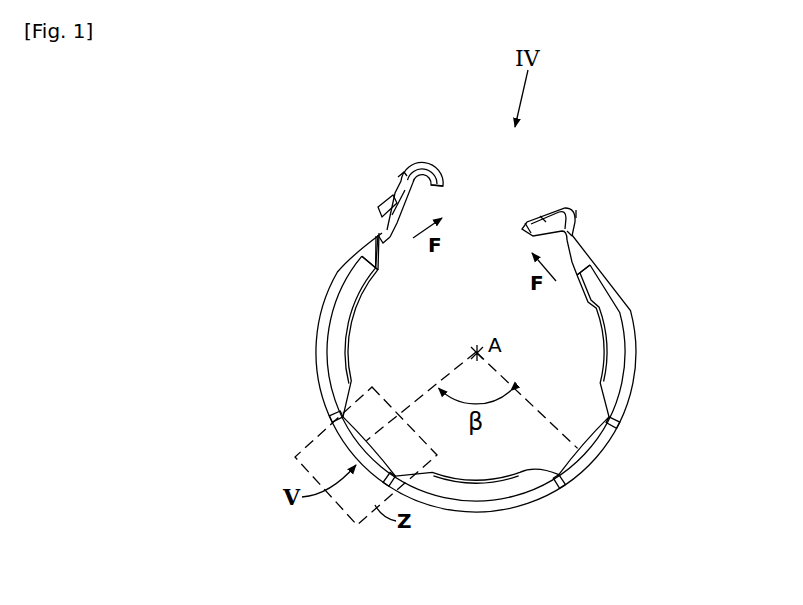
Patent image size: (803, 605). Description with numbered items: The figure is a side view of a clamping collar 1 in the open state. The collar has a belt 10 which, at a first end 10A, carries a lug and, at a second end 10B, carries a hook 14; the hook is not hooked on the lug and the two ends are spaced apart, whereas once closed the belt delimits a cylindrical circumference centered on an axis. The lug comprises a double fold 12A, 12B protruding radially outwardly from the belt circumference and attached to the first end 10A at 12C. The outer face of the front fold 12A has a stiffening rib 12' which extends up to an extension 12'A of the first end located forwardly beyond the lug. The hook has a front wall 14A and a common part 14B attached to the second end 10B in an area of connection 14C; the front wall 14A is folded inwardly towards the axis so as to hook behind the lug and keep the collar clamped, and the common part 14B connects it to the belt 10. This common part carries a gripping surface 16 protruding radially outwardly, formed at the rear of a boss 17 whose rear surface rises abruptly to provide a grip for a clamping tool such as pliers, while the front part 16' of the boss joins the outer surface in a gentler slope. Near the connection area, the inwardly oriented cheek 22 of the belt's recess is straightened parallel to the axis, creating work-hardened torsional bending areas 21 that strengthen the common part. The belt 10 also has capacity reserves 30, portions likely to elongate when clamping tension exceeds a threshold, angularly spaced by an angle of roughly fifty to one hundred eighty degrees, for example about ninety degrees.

The clamping collar 1 is at (255, 418).
The belt 10 is at (320, 345).
The first end 10A is at (596, 247).
The second end 10B is at (372, 242).
The front fold 12A is at (553, 211).
The rear fold 12B is at (578, 212).
The attachment area of the lug 12C is at (574, 230).
The stiffening rib 12' is at (525, 201).
The extension of the first end 12'A is at (501, 244).
The hook 14 is at (382, 128).
The front wall 14A is at (440, 168).
The common part 14B is at (390, 140).
The area of connection 14C is at (378, 212).
The gripping surface 16 is at (412, 258).
The front part of the boss 16' is at (418, 150).
The boss 17 is at (444, 189).
The torsional bending areas 21 is at (383, 279).
The cheek 22 is at (340, 327).
The capacity reserve 30 is at (365, 478).